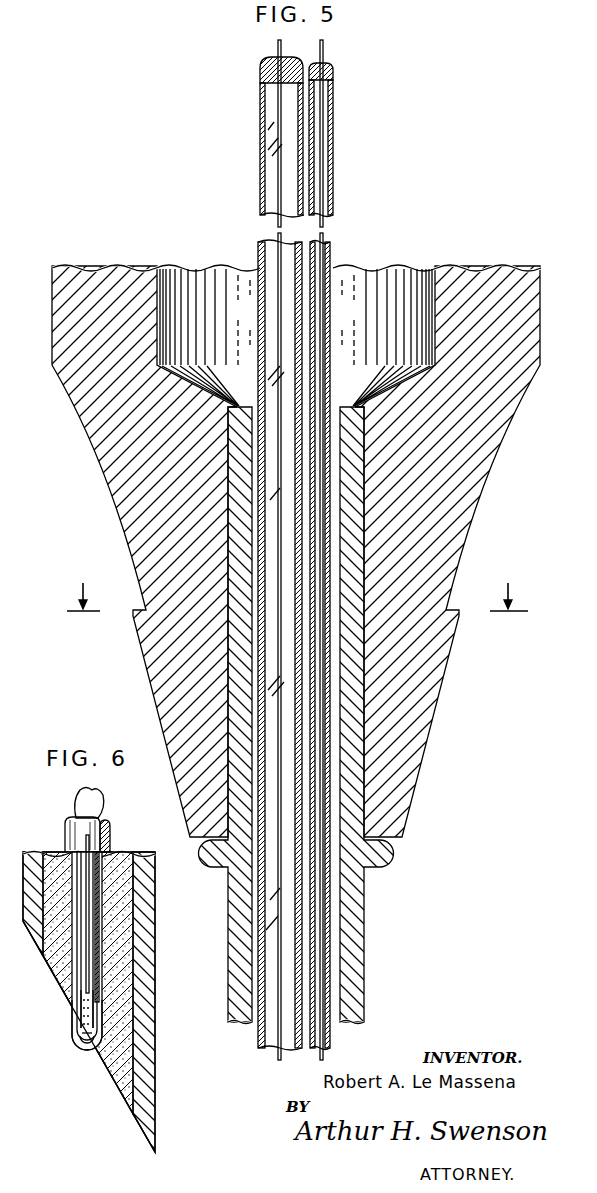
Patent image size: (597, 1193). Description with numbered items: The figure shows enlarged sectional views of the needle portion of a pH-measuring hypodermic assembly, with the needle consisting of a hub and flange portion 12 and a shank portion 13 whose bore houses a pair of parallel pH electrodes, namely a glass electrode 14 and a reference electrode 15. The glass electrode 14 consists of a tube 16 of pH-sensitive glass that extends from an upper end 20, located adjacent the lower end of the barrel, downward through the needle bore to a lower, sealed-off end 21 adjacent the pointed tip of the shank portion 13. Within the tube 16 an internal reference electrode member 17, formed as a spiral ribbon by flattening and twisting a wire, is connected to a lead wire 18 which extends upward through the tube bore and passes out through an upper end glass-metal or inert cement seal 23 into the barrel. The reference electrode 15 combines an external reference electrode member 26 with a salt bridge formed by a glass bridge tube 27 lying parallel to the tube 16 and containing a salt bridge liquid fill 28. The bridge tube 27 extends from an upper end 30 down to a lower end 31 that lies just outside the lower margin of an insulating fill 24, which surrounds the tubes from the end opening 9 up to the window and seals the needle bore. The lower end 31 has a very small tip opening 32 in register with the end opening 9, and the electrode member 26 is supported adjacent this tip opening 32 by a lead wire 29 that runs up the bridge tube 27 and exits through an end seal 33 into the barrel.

In FIG. 5, the end opening 9 is at (297, 583).
In FIG. 6, the end opening 9 is at (125, 1108).
In FIG. 5, the hub and flange portion 12 is at (422, 683).
In FIG. 5, the shank portion 13 is at (353, 937).
In FIG. 6, the shank portion 13 is at (143, 907).
In FIG. 5, the glass electrode 14 is at (237, 131).
In FIG. 5, the reference electrode 15 is at (382, 131).
In FIG. 5, the tube 16 is at (262, 202).
In FIG. 6, the tube 16 is at (68, 827).
In FIG. 6, the internal reference electrode member 17 is at (83, 795).
In FIG. 5, the lead wire 18 is at (277, 45).
In FIG. 5, the upper end 20 is at (262, 93).
In FIG. 6, the lower sealed-off end 21 is at (133, 944).
In FIG. 5, the upper end seal 23 is at (267, 62).
In FIG. 6, the insulating fill 24 is at (110, 1077).
In FIG. 6, the external reference electrode member 26 is at (90, 994).
In FIG. 5, the glass bridge tube 27 is at (333, 202).
In FIG. 6, the glass bridge tube 27 is at (78, 991).
In FIG. 6, the salt bridge liquid fill 28 is at (80, 1017).
In FIG. 5, the lead wire 29 is at (325, 47).
In FIG. 6, the lead wire 29 is at (110, 838).
In FIG. 5, the upper end 30 is at (333, 97).
In FIG. 6, the lower end 31 is at (83, 1042).
In FIG. 6, the tip opening 32 is at (90, 1046).
In FIG. 5, the end seal 33 is at (327, 63).